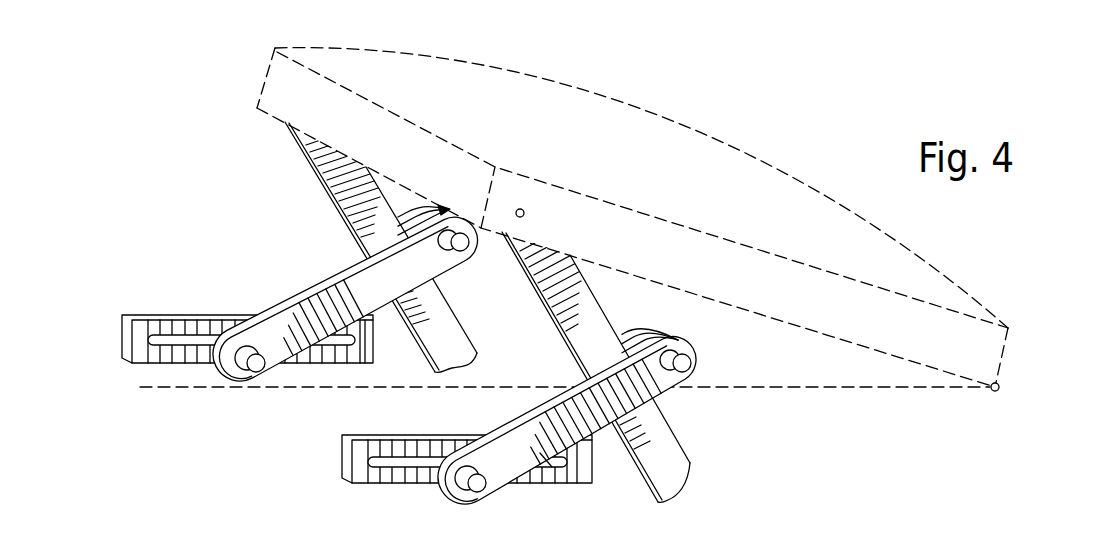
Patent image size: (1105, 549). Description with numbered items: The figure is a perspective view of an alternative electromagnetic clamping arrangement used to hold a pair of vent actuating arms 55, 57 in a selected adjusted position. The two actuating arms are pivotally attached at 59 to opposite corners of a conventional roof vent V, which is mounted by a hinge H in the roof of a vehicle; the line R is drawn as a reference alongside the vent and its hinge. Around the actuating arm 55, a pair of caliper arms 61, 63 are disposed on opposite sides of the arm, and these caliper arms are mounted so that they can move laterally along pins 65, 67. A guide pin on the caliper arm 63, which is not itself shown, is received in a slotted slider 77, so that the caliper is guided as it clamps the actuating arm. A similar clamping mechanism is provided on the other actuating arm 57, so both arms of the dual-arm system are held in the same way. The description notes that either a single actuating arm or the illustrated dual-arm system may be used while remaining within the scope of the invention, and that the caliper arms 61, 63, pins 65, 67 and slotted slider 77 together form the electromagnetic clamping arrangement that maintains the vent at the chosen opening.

The vent actuating arm 55 is at (688, 473).
The vent actuating arm 57 is at (445, 308).
The pivotal attachment 59 is at (524, 214).
The caliper arm 61 is at (527, 452).
The caliper arm 63 is at (482, 418).
The pin 65 is at (485, 485).
The pin 67 is at (690, 370).
The slotted slider 77 is at (380, 466).
The roof vent V is at (765, 168).
The hinge H is at (1000, 387).
The reference line R is at (797, 388).